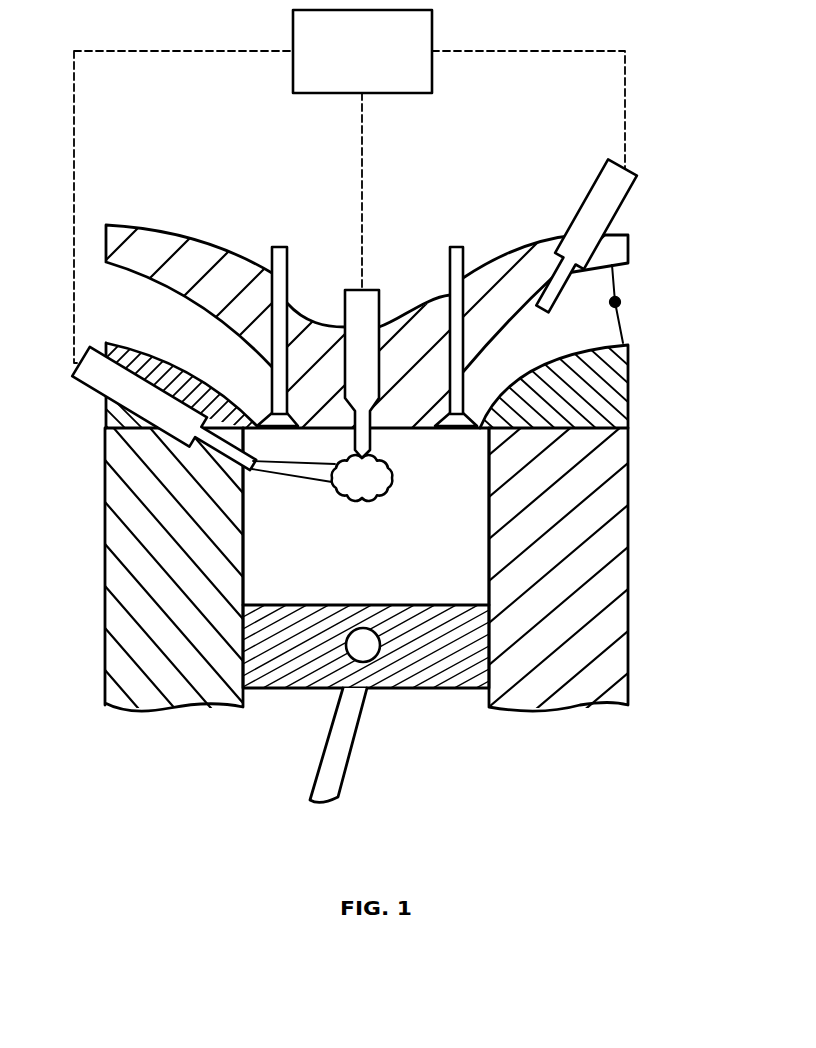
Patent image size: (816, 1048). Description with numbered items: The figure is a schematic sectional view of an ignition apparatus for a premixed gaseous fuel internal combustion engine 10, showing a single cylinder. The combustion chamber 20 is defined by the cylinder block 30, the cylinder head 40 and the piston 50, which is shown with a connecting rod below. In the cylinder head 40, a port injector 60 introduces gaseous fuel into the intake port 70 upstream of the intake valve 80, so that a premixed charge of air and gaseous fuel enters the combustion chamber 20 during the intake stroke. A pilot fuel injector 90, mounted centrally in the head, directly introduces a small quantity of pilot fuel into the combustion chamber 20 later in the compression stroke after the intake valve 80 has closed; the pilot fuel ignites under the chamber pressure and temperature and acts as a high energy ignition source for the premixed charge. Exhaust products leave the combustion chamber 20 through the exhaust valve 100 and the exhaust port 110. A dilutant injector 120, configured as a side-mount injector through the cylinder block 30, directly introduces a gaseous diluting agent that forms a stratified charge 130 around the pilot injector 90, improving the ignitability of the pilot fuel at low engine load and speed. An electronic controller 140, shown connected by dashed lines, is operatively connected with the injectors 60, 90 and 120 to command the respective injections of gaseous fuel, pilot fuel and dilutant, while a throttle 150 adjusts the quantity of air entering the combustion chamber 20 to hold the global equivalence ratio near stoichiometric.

The internal combustion engine 10 is at (679, 99).
The combustion chamber 20 is at (350, 549).
The cylinder block 30 is at (155, 537).
The cylinder head 40 is at (585, 400).
The piston 50 is at (433, 663).
The port injector 60 is at (617, 210).
The intake port 70 is at (563, 334).
The intake valve 80 is at (450, 260).
The pilot fuel injector 90 is at (345, 302).
The exhaust valve 100 is at (272, 259).
The exhaust port 110 is at (143, 329).
The dilutant injector 120 is at (94, 392).
The stratified charge 130 is at (345, 489).
The electronic controller 140 is at (347, 64).
The throttle 150 is at (617, 308).